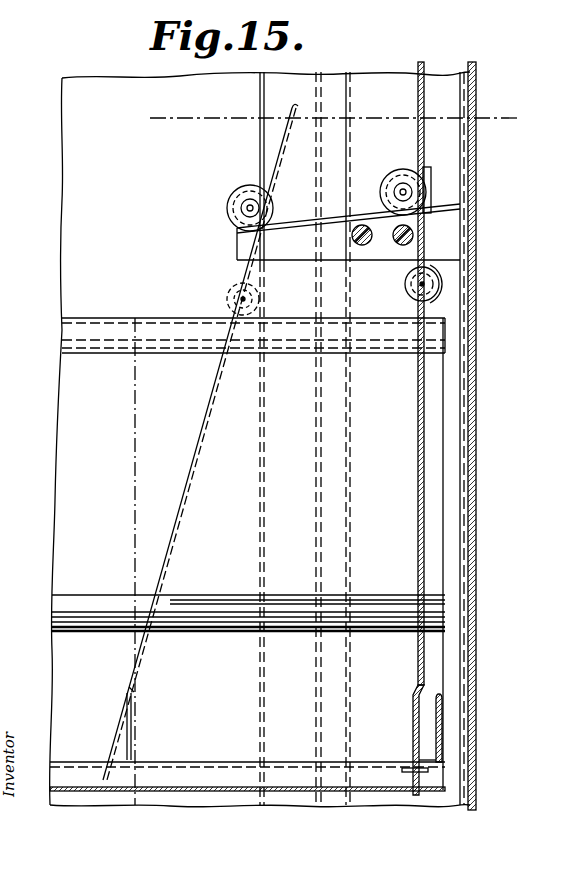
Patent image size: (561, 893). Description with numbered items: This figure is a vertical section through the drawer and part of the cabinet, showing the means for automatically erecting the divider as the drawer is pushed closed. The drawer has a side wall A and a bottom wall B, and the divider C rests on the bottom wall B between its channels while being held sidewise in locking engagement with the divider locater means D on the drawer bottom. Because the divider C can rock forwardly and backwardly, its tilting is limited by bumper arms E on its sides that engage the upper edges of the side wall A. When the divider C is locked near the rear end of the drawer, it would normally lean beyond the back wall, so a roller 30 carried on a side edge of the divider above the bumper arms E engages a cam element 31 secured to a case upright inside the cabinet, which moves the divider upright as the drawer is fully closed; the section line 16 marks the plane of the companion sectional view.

The section line 16- 16 is at (172, 106).
The roller 30 is at (283, 195).
The cam element 31 is at (232, 234).
The side wall A is at (84, 250).
The bottom wall B is at (481, 305).
The divider C is at (202, 419).
The divider locater means D is at (193, 765).
The bumper arms E is at (266, 297).